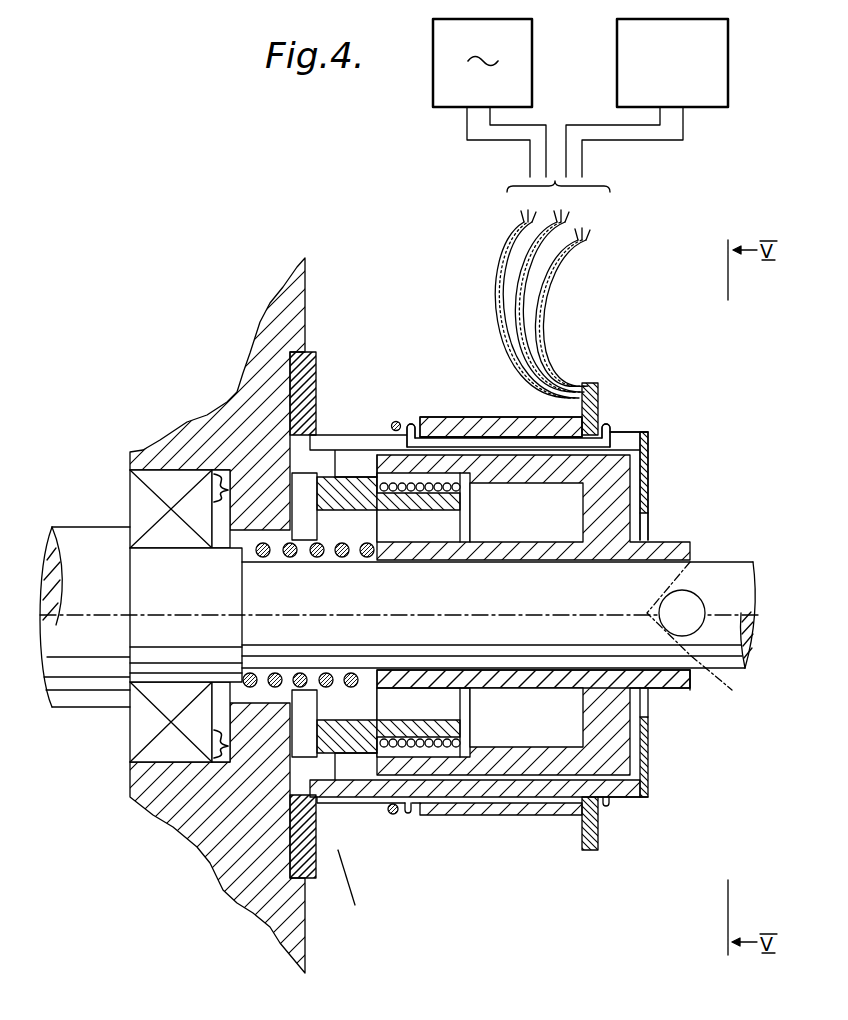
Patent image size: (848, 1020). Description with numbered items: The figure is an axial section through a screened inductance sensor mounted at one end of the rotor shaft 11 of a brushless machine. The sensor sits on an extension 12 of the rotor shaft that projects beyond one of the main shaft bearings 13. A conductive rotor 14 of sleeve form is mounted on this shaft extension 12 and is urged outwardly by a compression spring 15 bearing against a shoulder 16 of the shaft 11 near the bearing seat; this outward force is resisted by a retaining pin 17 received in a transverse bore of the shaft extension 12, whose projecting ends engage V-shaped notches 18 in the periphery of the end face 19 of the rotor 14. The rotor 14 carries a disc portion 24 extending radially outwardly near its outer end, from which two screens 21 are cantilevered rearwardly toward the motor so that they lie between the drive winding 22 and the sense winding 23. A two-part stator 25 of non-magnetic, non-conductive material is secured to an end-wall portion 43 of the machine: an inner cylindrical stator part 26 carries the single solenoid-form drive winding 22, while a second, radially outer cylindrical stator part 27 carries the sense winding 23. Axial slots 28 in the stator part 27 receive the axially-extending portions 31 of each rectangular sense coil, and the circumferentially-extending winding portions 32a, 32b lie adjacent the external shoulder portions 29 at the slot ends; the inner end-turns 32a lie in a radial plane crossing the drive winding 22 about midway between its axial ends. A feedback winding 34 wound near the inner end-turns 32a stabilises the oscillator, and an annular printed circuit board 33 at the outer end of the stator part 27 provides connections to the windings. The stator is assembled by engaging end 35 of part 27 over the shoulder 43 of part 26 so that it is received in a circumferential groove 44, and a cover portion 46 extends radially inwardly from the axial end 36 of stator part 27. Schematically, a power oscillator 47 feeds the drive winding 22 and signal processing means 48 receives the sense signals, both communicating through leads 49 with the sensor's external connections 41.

The rotor shaft 11 is at (62, 692).
The extension of the rotor shaft 12 is at (483, 600).
The main shaft bearing 13 is at (131, 797).
The conductive rotor 14 is at (490, 674).
The compression spring 15 is at (299, 665).
The shoulder 16 is at (247, 601).
The retaining pin 17 is at (690, 602).
The V-shaped notches 18 is at (702, 636).
The end face 19 is at (697, 683).
The screens 21 is at (500, 477).
The drive winding 22 is at (432, 495).
The sense winding 23 is at (457, 437).
The disc portion 24 is at (620, 513).
The two-part stator 25 is at (338, 850).
The cylindrical stator part 26 is at (363, 497).
The second cylindrical stator part 27 is at (325, 436).
The axial slots 28 is at (407, 427).
The shoulder portion 29 is at (483, 423).
The axially-extending portions 31 is at (508, 437).
The inner end-turns 32a is at (414, 432).
The circumferentially-extending winding portions 32b is at (611, 426).
The printed circuit board 33 is at (594, 384).
The feedback winding 34 is at (394, 421).
The end of stator part 35 is at (356, 506).
The axial end 36 is at (648, 438).
The external connections 41 is at (566, 264).
The end-wall portion 43 is at (306, 303).
The circumferential groove 44 is at (297, 421).
The cover portion 46 is at (645, 470).
The power oscillator 47 is at (442, 86).
The signal processing means 48 is at (628, 62).
The leads 49 is at (497, 136).